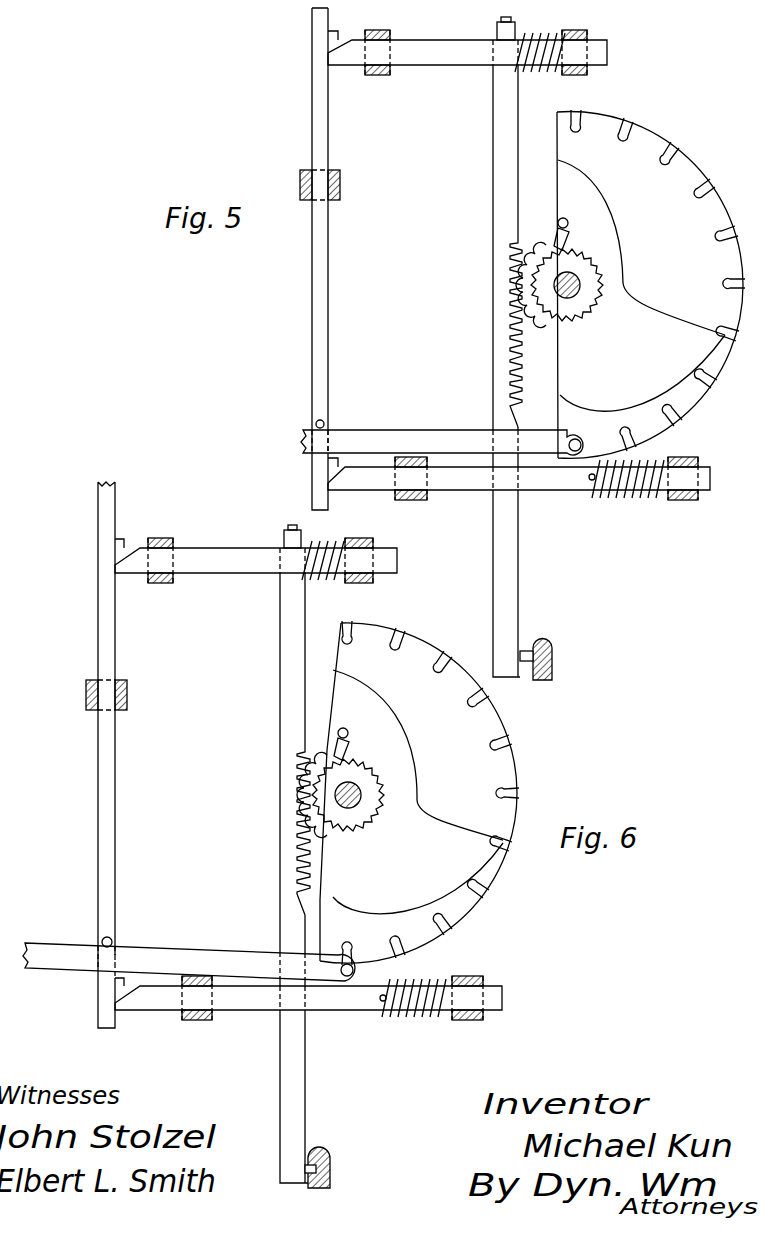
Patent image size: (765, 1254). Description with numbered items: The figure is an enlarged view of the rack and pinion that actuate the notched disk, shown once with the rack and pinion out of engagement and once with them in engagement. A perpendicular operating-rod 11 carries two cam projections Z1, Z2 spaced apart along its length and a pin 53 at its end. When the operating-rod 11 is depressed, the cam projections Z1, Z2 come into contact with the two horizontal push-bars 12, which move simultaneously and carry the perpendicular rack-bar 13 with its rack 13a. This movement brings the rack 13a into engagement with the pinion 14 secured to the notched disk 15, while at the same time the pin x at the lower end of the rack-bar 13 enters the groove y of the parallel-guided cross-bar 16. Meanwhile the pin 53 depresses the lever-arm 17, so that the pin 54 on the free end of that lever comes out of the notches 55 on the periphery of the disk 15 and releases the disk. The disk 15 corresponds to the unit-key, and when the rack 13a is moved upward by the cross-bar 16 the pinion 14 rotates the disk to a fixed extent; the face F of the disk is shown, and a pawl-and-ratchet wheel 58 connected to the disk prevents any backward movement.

In FIG. 5, the perpendicular operating-rod 11 is at (322, 137).
In FIG. 6, the perpendicular operating-rod 11 is at (106, 755).
In FIG. 5, the horizontal push-bar 12 is at (519, 258).
In FIG. 6, the horizontal push-bar 12 is at (308, 772).
In FIG. 5, the rack-bar 13 is at (506, 358).
In FIG. 6, the rack-bar 13 is at (294, 865).
In FIG. 5, the perpendicular rack 13a is at (510, 337).
In FIG. 6, the perpendicular rack 13a is at (297, 842).
In FIG. 5, the pinion 14 is at (542, 273).
In FIG. 6, the pinion 14 is at (323, 783).
In FIG. 5, the notched disk 15 is at (651, 284).
In FIG. 6, the notched disk 15 is at (419, 793).
In FIG. 5, the cross-bar 16 is at (553, 670).
In FIG. 6, the cross-bar 16 is at (332, 1178).
In FIG. 5, the lever-arm 17 is at (442, 442).
In FIG. 6, the lever-arm 17 is at (189, 962).
In FIG. 5, the pin 53 is at (316, 424).
In FIG. 6, the pin 53 is at (112, 940).
In FIG. 5, the pin 54 is at (582, 438).
In FIG. 6, the pin 54 is at (355, 970).
In FIG. 5, the notches 55 is at (678, 413).
In FIG. 6, the notches 55 is at (515, 793).
In FIG. 5, the pawl-and-ratchet wheel 58 is at (580, 300).
In FIG. 6, the pawl-and-ratchet wheel 58 is at (362, 805).
In FIG. 5, the cam projection Z1 is at (338, 40).
In FIG. 6, the cam projection Z1 is at (124, 548).
In FIG. 5, the cam projection Z2 is at (335, 470).
In FIG. 6, the cam projection Z2 is at (118, 993).
In FIG. 5, the pin x is at (530, 650).
In FIG. 6, the pin x is at (313, 1160).
In FIG. 5, the groove y is at (553, 660).
In FIG. 6, the groove y is at (332, 1165).
In FIG. 5, the cam face F is at (652, 371).
In FIG. 6, the cam face F is at (418, 873).